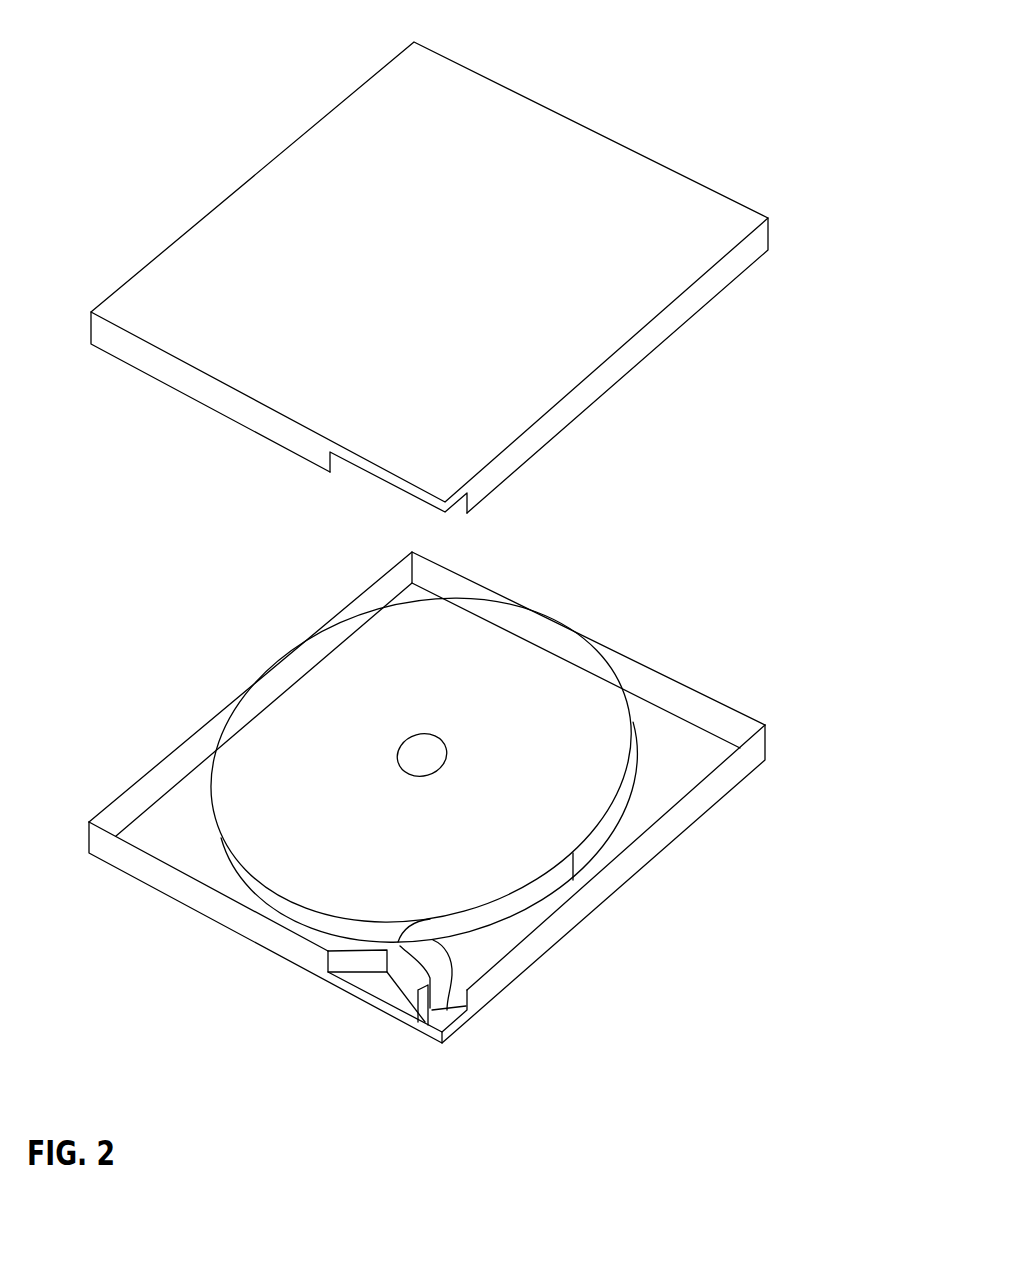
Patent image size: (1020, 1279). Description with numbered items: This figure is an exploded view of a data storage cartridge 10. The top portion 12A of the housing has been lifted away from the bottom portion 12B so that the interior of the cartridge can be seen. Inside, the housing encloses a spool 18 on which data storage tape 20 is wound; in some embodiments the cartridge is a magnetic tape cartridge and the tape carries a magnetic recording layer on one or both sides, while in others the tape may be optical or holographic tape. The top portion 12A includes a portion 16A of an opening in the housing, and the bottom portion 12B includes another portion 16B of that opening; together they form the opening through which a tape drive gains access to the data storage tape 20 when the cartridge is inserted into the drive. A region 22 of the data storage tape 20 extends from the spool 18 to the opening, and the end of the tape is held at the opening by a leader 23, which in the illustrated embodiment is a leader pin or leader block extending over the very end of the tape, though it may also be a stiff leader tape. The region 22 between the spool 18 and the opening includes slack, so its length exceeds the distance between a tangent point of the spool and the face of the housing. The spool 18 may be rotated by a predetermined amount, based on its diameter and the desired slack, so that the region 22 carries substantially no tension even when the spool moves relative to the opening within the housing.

The data storage cartridge 10 is at (188, 57).
The top portion 12A is at (429, 286).
The bottom portion 12B is at (401, 804).
The portion of an opening 16A is at (379, 506).
The portion of an opening 16B is at (362, 1013).
The spool 18 is at (558, 647).
The data storage tape 20 is at (620, 805).
The region of data storage tape 22 is at (523, 900).
The leader 23 is at (433, 1017).